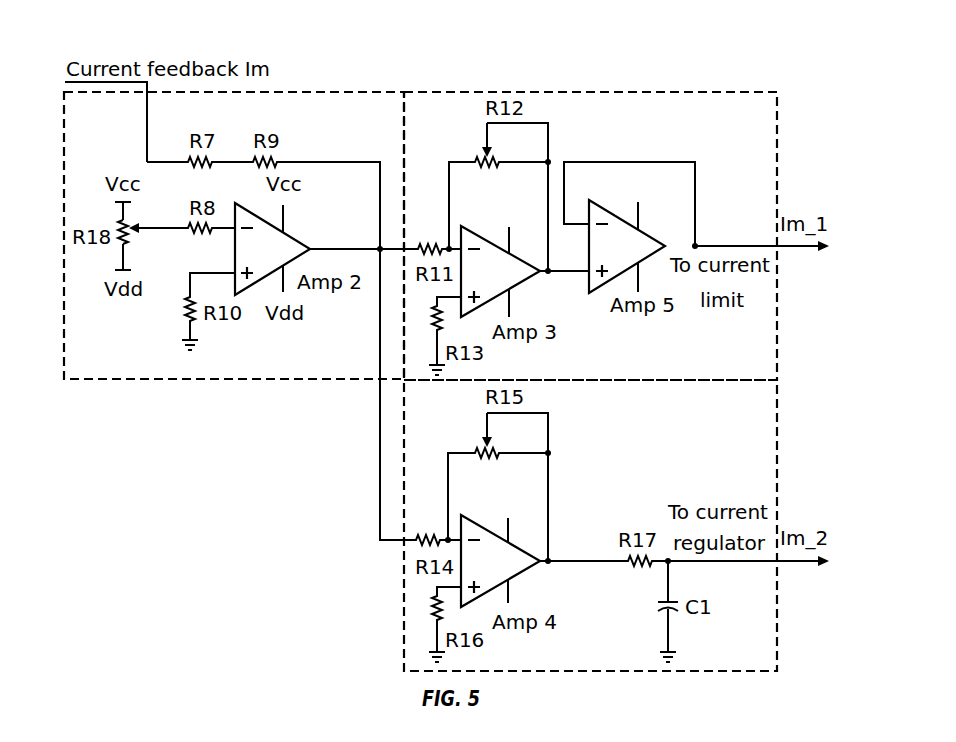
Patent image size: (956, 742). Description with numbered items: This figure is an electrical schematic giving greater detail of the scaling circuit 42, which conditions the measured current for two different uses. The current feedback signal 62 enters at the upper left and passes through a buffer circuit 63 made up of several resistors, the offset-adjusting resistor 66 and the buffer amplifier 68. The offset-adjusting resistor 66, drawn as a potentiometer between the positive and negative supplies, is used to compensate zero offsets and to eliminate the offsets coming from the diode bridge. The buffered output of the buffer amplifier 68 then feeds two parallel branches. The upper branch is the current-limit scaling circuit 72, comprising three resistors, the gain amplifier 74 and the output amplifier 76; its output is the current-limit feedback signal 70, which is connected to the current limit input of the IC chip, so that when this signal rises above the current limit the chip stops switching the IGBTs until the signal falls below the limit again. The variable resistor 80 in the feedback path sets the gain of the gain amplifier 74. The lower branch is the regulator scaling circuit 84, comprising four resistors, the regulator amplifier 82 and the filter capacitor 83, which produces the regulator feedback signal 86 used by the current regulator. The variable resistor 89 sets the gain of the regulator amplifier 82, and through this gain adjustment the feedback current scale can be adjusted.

The scaling circuit 42 is at (277, 500).
The current feedback Im 62 is at (80, 84).
The buffer circuit 63 is at (163, 380).
The resistor R18 66 is at (133, 246).
The amplifier Amp 2 68 is at (272, 249).
The current feedback Im_1 70 is at (798, 251).
The scaling circuit 72 is at (685, 91).
The amplifier Amp 3 74 is at (500, 271).
The amplifier Amp 5 76 is at (627, 246).
The variable resistor R12 80 is at (482, 153).
The amplifier Amp 4 82 is at (500, 561).
The capacitor C1 83 is at (673, 613).
The scaling circuit 84 is at (400, 608).
The current feedback Im_2 86 is at (800, 566).
The variable resistor R15 89 is at (480, 446).